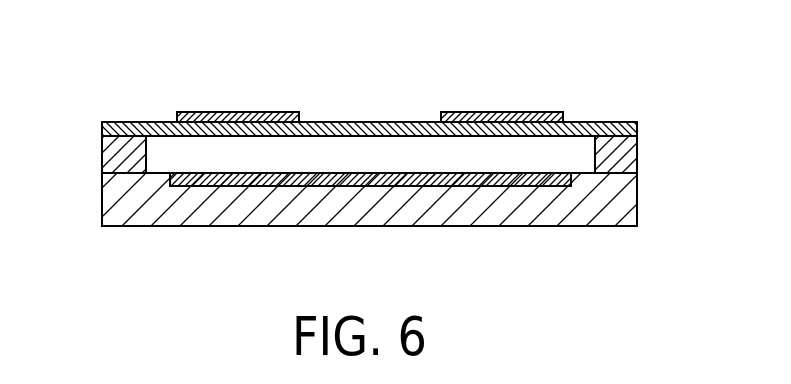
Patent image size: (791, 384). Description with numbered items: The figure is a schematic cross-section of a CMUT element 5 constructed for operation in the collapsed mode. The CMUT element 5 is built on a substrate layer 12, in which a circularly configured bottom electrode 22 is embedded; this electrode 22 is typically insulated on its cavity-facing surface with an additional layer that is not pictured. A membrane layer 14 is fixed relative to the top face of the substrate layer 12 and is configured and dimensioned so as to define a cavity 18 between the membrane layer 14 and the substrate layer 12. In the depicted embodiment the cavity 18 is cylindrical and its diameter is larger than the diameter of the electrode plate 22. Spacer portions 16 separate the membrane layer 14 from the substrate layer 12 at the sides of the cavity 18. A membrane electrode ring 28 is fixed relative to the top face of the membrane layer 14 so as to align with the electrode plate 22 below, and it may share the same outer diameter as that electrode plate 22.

The CMUT element 5 is at (127, 77).
The substrate layer 12 is at (102, 198).
The membrane layer 14 is at (638, 123).
The spacer wall 16 is at (102, 153).
The cavity 18 is at (389, 152).
The electrode 22 is at (467, 187).
The membrane electrode ring 28 is at (238, 112).